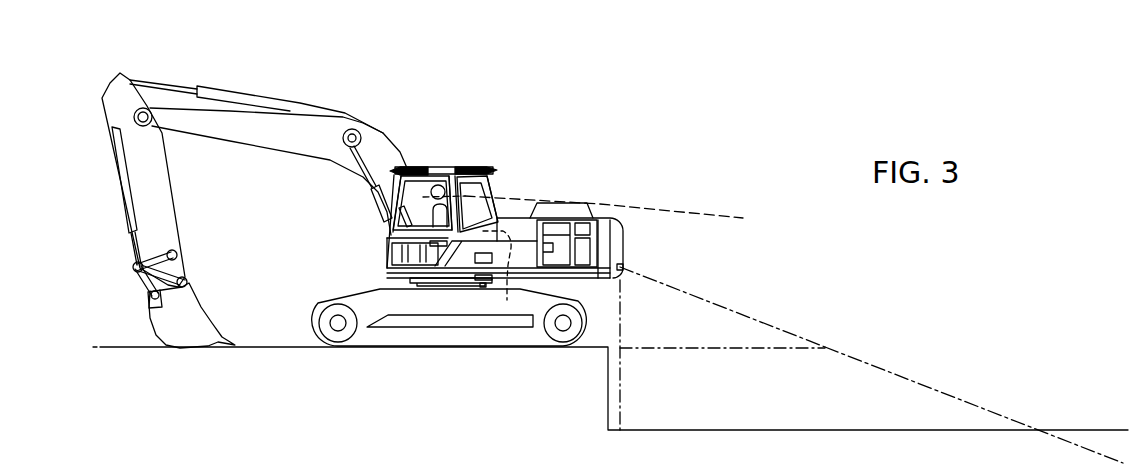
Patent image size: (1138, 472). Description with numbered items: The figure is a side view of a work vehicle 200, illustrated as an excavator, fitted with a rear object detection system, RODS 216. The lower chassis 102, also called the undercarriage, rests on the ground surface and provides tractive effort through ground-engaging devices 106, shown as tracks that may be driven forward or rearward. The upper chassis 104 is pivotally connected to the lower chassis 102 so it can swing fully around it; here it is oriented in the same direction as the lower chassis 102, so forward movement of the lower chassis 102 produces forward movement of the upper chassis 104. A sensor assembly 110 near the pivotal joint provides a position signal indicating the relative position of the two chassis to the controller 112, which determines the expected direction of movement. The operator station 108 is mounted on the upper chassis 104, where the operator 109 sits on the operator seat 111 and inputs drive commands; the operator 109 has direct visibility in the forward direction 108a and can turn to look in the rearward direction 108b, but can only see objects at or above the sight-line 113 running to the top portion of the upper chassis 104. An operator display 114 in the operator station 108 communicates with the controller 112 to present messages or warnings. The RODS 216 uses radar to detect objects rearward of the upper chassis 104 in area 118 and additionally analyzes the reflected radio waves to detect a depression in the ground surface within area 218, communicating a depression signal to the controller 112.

The lower chassis 102 is at (303, 296).
The upper chassis 104 is at (355, 204).
The ground-engaging devices 106 is at (370, 290).
The operator station 108 is at (450, 167).
The forward direction 108a is at (410, 165).
The rearward direction 108b is at (472, 167).
The operator 109 is at (438, 185).
The sensor assembly 110 is at (480, 287).
The operator seat 111 is at (435, 242).
The controller 112 is at (507, 300).
The sight-line 113 is at (727, 210).
The operator display 114 is at (383, 205).
The area 118 is at (720, 318).
The work vehicle 200 is at (556, 175).
The RODS 216 is at (620, 264).
The area 218 is at (883, 383).